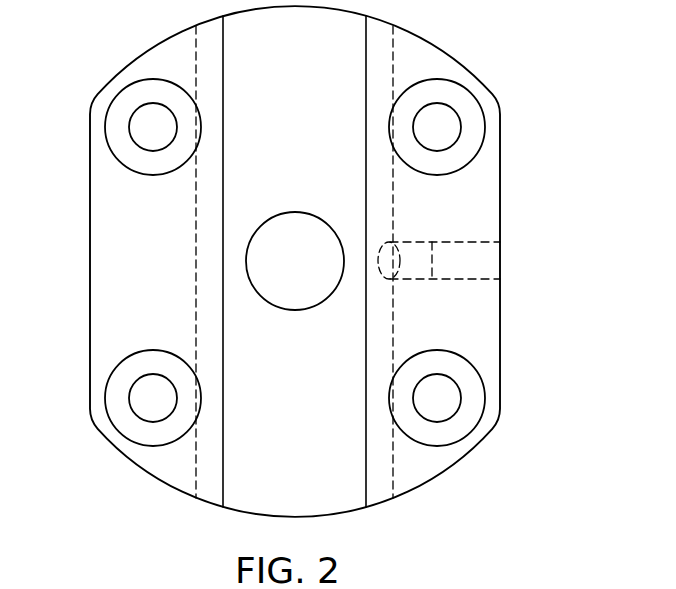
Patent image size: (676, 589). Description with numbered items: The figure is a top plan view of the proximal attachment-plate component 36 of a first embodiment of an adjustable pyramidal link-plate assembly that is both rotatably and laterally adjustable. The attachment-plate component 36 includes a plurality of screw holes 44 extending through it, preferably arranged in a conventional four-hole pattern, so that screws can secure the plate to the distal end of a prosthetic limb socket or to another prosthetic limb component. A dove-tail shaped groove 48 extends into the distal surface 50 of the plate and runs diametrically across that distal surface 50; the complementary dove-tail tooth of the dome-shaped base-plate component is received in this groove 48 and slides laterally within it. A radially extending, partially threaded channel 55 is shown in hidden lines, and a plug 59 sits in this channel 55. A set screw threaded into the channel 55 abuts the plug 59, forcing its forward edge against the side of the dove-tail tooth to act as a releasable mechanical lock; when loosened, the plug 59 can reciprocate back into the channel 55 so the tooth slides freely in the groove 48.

The proximal attachment-plate component 36 is at (102, 242).
The screw holes 44 is at (139, 116).
The dove-tail shaped groove 48 is at (342, 495).
The distal surface 50 is at (174, 472).
The partially threaded channel 55 is at (487, 262).
The plug 59 is at (420, 252).